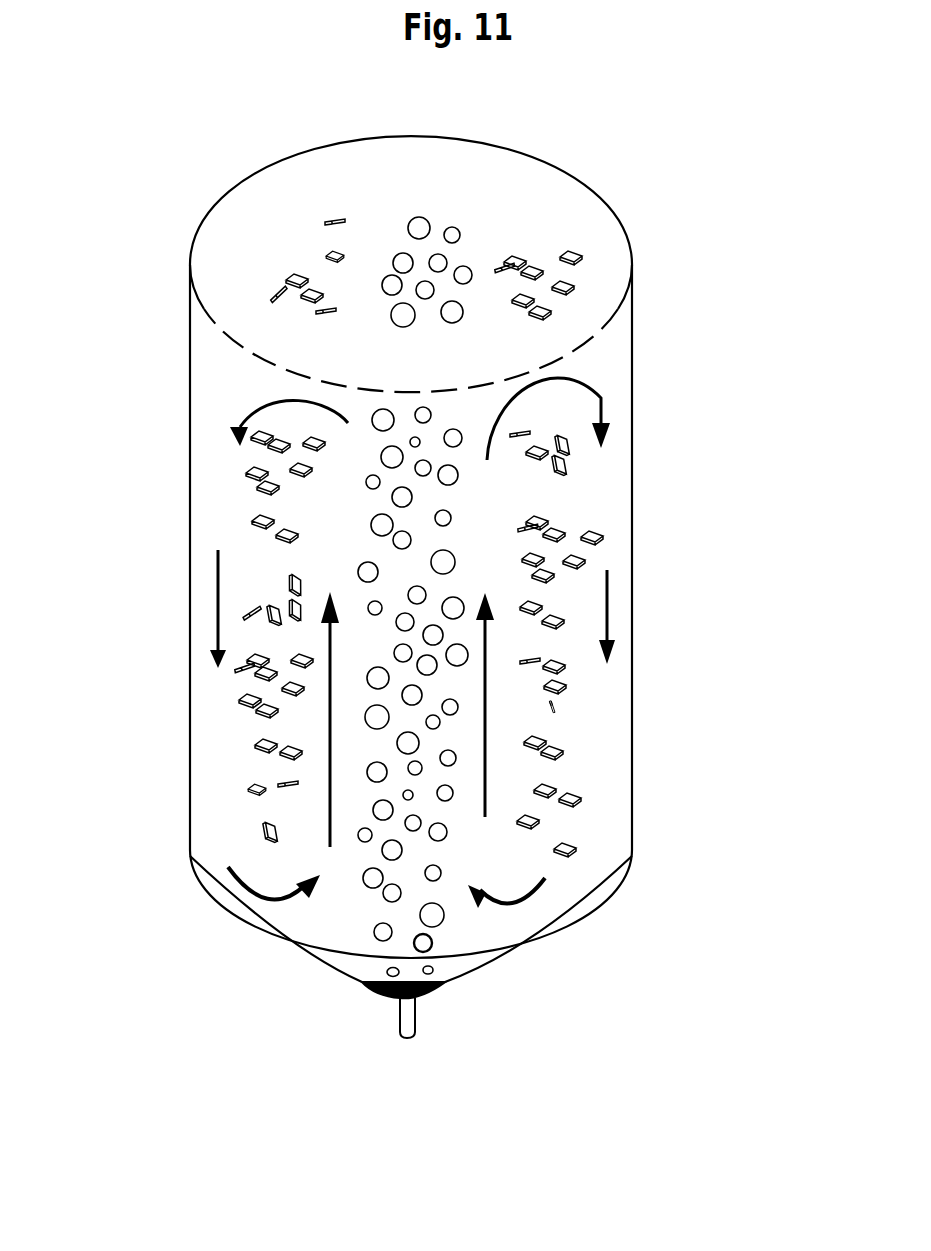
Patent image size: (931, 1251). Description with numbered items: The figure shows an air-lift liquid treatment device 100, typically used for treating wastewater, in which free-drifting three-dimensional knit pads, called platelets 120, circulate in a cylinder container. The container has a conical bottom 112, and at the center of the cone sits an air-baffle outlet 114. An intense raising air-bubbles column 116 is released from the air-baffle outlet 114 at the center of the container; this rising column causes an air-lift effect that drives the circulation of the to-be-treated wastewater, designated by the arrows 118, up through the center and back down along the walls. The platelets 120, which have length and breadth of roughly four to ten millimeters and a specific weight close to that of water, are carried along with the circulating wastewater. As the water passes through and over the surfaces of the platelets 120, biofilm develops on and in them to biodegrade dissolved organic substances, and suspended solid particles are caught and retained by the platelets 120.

The air-lift liquid treatment device 100 is at (663, 343).
The conical bottom 112 is at (489, 979).
The air-baffle outlet 114 is at (385, 998).
The raising air-bubbles column 116 is at (340, 553).
The arrows 118 is at (610, 613).
The platelets 120 is at (563, 690).